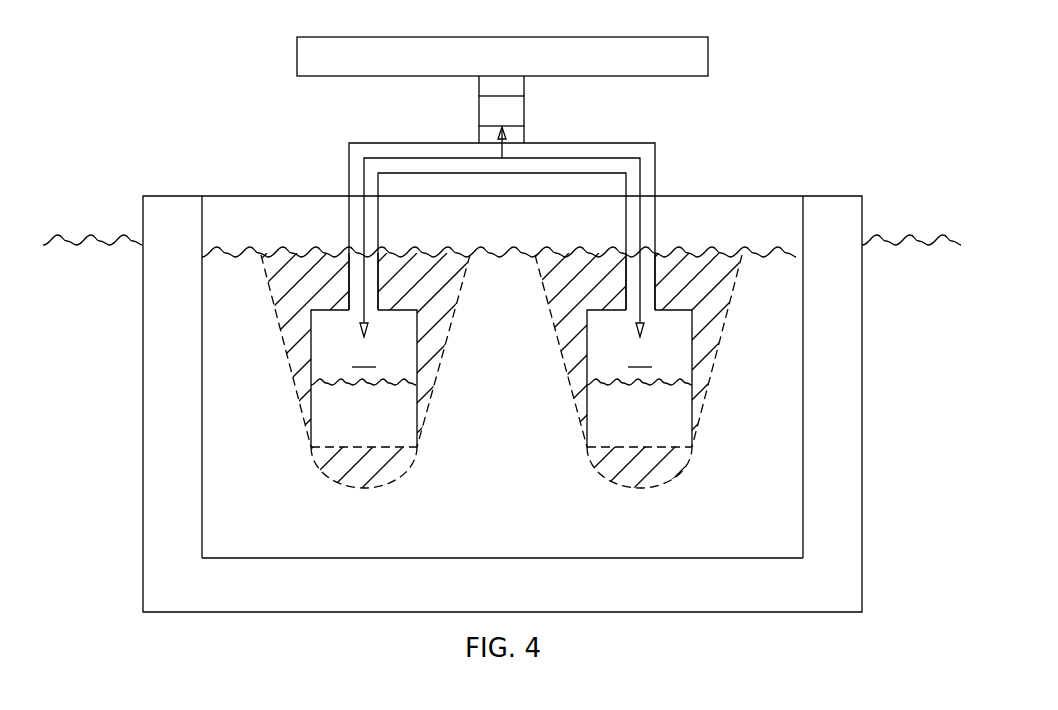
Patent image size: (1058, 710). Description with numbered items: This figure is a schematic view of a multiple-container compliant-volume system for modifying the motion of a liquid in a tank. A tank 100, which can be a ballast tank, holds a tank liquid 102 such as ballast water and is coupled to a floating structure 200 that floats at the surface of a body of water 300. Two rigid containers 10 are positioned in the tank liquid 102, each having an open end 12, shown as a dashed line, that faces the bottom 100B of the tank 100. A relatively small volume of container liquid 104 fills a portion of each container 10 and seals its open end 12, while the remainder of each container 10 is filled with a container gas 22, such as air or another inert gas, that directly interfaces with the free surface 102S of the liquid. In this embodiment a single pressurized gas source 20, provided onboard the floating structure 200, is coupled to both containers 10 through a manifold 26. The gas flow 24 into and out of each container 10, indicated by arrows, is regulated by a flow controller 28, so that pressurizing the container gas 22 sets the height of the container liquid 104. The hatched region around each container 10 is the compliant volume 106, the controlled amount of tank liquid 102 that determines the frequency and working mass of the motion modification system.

The pressurized gas source 20 is at (708, 55).
The flow controller 28 is at (479, 113).
The manifold 26 is at (349, 157).
The gas flow 24 is at (364, 215).
The container gas 22 is at (502, 355).
The tank 100 is at (802, 228).
The bottom of tank 100B is at (755, 557).
The floating structure 200 is at (170, 196).
The body of water 300 is at (97, 233).
The water surface in moon pool 102S is at (711, 248).
The tank liquid 102 is at (755, 408).
The compliant volume 106 is at (292, 297).
The container 10 is at (312, 360).
The container liquid 104 is at (355, 415).
The open end 12 is at (340, 457).